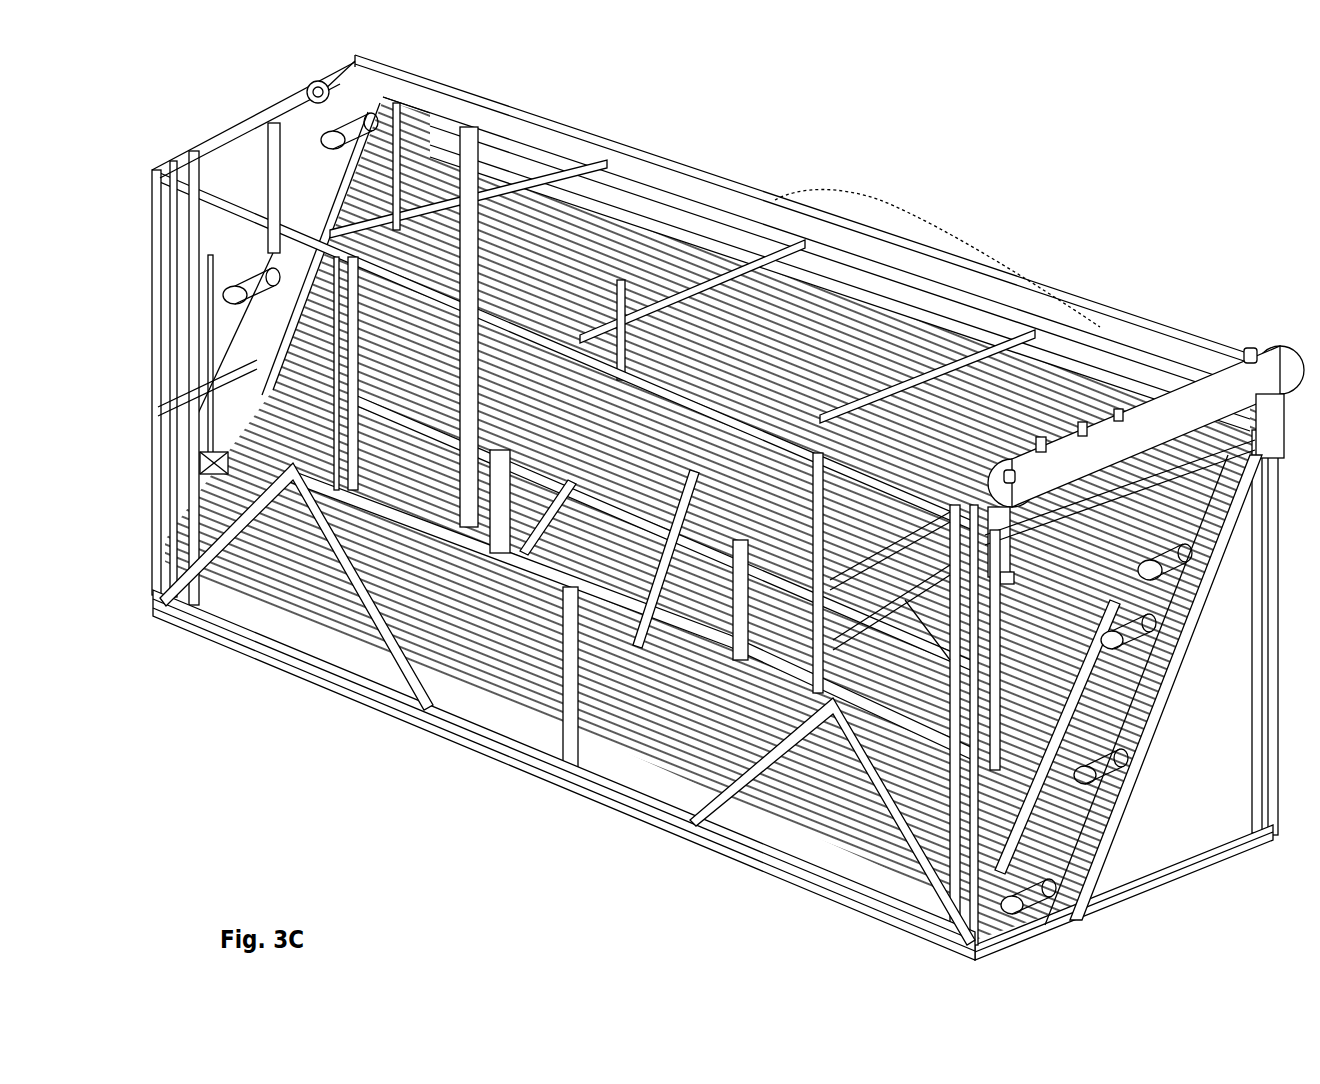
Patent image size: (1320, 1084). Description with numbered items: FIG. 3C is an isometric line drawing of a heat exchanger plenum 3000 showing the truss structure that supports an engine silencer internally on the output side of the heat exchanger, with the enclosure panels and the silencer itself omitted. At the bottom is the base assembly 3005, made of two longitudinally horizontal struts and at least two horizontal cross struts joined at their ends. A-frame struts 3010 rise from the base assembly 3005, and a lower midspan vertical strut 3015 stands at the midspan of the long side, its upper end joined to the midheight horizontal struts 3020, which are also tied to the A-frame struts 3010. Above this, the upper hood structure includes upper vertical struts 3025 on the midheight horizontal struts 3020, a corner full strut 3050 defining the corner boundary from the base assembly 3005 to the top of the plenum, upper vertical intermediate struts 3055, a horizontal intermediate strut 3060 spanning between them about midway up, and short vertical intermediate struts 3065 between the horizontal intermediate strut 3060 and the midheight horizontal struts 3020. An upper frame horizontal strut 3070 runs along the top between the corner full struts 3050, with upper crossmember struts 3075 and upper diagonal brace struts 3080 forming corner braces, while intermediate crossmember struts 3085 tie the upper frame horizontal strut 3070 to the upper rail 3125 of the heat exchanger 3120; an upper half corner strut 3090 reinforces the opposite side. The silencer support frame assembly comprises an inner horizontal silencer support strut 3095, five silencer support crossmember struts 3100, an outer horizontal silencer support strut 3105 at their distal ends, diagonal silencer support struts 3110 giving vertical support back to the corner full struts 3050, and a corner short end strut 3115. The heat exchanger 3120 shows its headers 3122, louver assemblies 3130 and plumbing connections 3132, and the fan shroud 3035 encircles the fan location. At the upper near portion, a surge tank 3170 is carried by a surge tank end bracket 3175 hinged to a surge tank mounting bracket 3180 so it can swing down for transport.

The heat exchanger plenum 3000 is at (700, 500).
The base assembly 3005 is at (640, 790).
The A-frame struts 3010 is at (327, 540).
The lower midspan vertical strut 3015 is at (580, 718).
The midheight horizontal struts 3020 is at (252, 455).
The upper vertical struts 3025 is at (210, 395).
The fan shroud 3035 is at (975, 238).
The corner full strut 3050 is at (152, 560).
The upper vertical intermediate struts 3055 is at (458, 492).
The horizontal intermediate strut 3060 is at (700, 530).
The short vertical intermediate struts 3065 is at (490, 540).
The upper frame horizontal strut 3070 is at (722, 402).
The upper crossmember struts 3075 is at (245, 135).
The upper diagonal brace struts 3080 is at (280, 152).
The intermediate crossmember struts 3085 is at (515, 213).
The upper half corner strut 3090 is at (462, 66).
The inner horizontal silencer support strut 3095 is at (905, 600).
The silencer support crossmember struts 3100 is at (592, 400).
The outer horizontal silencer support strut 3105 is at (1110, 563).
The diagonal silencer support struts 3110 is at (552, 512).
The corner short end strut 3115 is at (1003, 575).
The heat exchanger 3120 is at (1225, 545).
The headers 3122 is at (265, 338).
The upper rail 3125 is at (520, 133).
The louver assemblies 3130 is at (648, 198).
The plumbing connections 3132 is at (306, 92).
The surge tank 3170 is at (1130, 432).
The surge tank end bracket 3175 is at (1278, 408).
The surge tank mounting bracket 3180 is at (1282, 455).